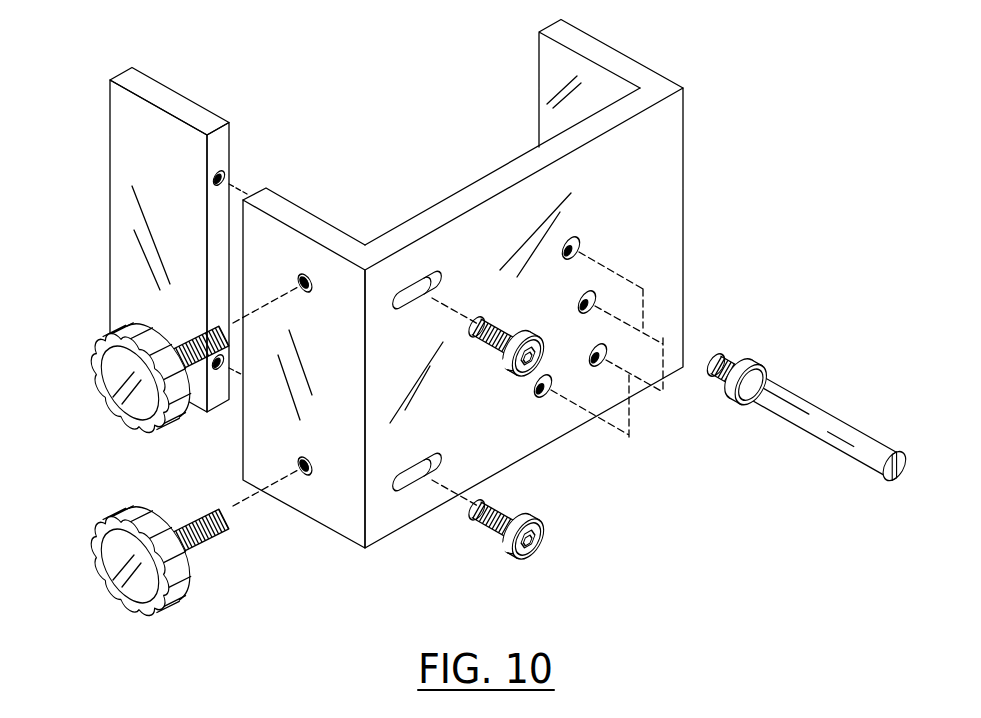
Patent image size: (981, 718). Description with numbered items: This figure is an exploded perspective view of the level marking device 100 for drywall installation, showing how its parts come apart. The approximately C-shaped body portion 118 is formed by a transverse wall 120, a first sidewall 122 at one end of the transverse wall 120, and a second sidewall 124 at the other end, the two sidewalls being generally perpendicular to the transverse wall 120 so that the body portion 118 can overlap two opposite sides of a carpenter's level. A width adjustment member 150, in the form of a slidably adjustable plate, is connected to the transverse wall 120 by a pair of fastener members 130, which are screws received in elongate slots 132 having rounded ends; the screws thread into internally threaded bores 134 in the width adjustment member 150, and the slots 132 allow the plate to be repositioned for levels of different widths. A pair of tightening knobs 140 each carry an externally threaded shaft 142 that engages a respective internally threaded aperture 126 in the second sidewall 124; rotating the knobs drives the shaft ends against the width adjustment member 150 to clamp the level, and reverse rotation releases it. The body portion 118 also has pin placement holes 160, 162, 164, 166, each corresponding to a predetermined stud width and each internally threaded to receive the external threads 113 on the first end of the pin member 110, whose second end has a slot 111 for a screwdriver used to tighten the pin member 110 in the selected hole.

The level marking device 100 is at (388, 331).
The pin member 110 is at (824, 421).
The slot 111 is at (893, 482).
The external threads 113 is at (720, 356).
The body portion 118 is at (395, 518).
The transverse wall 120 is at (562, 149).
The first sidewall 122 is at (618, 67).
The second sidewall 124 is at (288, 212).
The internally threaded apertures 126 is at (308, 274).
The fastener members 130 is at (540, 335).
The elongate slots 132 is at (431, 272).
The internally threaded bores 134 is at (221, 170).
The tightening knobs 140 is at (129, 469).
The externally threaded shaft 142 is at (188, 332).
The width adjustment member 150 is at (163, 93).
The pin placement hole 160 is at (572, 242).
The pin placement hole 162 is at (571, 354).
The pin placement hole 164 is at (578, 306).
The pin placement hole 166 is at (541, 396).